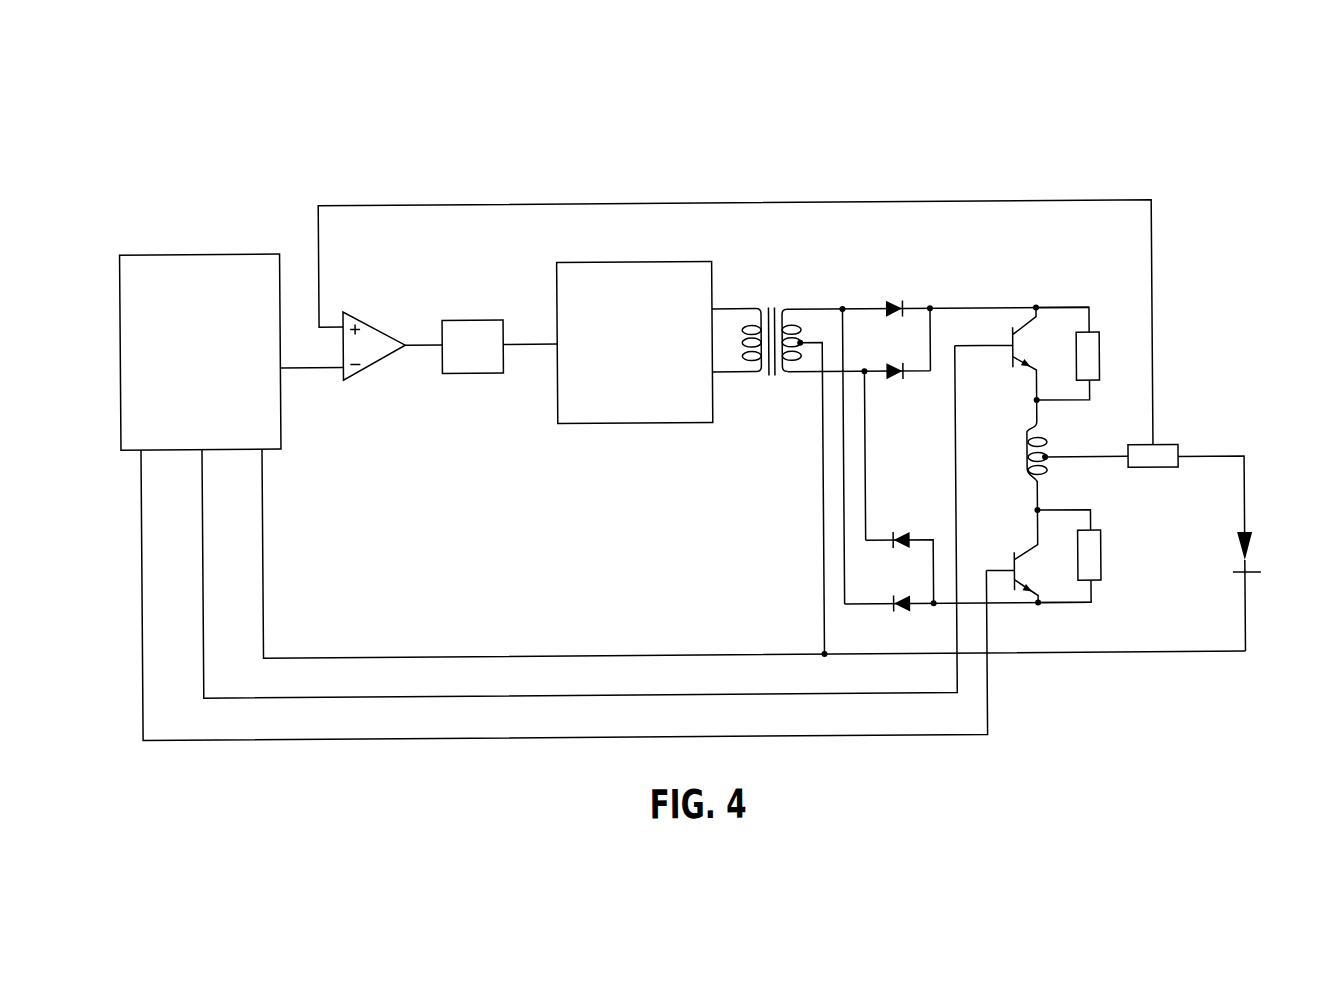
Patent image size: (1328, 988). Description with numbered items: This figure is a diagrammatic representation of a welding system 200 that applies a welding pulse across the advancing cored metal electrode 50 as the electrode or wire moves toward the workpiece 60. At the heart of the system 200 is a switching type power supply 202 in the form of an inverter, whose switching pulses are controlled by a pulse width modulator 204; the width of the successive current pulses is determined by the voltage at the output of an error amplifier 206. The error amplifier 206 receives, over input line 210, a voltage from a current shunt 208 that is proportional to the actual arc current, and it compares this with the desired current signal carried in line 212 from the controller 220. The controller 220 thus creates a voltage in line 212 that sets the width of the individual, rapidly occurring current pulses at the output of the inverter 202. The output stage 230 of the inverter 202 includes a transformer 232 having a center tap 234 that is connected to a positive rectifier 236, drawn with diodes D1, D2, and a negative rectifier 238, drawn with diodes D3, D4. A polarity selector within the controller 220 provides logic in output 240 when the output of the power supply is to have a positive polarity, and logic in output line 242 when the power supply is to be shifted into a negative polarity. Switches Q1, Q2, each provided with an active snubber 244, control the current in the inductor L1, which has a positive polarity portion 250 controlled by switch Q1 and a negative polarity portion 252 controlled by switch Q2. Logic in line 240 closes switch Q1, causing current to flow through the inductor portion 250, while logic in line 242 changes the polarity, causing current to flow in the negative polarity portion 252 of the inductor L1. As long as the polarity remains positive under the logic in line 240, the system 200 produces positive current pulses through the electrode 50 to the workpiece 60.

The system 200 is at (712, 452).
The input line 210 is at (379, 203).
The controller 220 is at (164, 251).
The line 212 is at (303, 365).
The error amplifier 206 is at (381, 325).
The pulse width modulator 204 is at (468, 318).
The switching type power supply 202 is at (605, 262).
The output stage 230 is at (785, 437).
The transformer 232 is at (772, 376).
The center tap 234 is at (802, 342).
The positive rectifier 236 is at (939, 427).
The negative rectifier 238 is at (968, 549).
The active snubber 244 is at (1100, 355).
The current shunt 208 is at (1165, 448).
The positive polarity portion 250 is at (1027, 433).
The negative polarity portion 252 is at (1027, 473).
The output line 240 is at (790, 694).
The output line 242 is at (855, 736).
The cored metal electrode 50 is at (1267, 556).
The workpiece 60 is at (1262, 591).
The diode D1 is at (896, 292).
The diode D2 is at (896, 388).
The diode D3 is at (899, 523).
The diode D4 is at (899, 616).
The switch Q1 is at (996, 354).
The switch Q2 is at (1011, 558).
The inductor L1 is at (1051, 459).